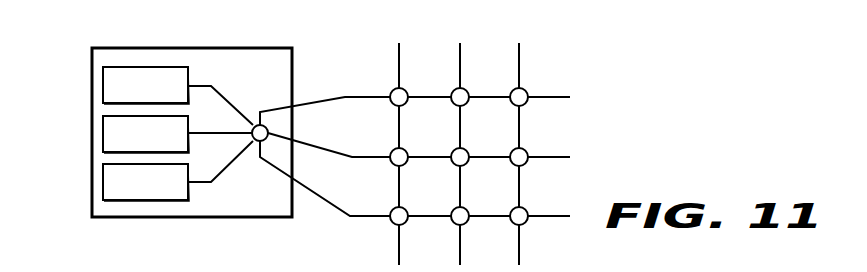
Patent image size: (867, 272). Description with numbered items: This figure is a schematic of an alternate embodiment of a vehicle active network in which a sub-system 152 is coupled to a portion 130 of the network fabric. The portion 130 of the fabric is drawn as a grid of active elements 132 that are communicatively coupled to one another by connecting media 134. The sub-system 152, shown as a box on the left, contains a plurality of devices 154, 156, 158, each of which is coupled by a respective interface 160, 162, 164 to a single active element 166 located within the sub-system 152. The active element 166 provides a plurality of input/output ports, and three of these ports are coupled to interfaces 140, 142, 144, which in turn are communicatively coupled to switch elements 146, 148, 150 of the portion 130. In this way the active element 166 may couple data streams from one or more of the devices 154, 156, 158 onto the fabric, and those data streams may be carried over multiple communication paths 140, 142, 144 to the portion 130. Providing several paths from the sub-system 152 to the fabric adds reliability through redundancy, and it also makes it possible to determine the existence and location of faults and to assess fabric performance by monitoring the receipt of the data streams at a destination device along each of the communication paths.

The portion of a fabric 130 is at (463, 154).
The active elements 132 is at (466, 104).
The connecting media 134 is at (520, 124).
The interface 140 is at (318, 101).
The interface 142 is at (318, 147).
The interface 144 is at (318, 197).
The switch element 146 is at (393, 104).
The switch element 148 is at (393, 164).
The switch element 150 is at (393, 223).
The sub-system 152 is at (191, 48).
The device 154 is at (103, 84).
The device 156 is at (103, 131).
The device 158 is at (103, 179).
The interface 160 is at (222, 172).
The interface 162 is at (218, 134).
The interface 164 is at (222, 95).
The active element 166 is at (258, 111).